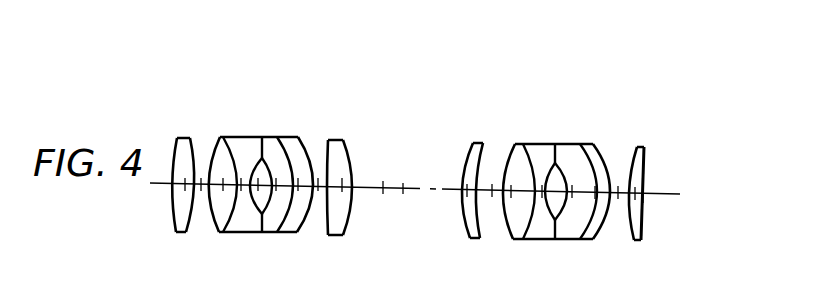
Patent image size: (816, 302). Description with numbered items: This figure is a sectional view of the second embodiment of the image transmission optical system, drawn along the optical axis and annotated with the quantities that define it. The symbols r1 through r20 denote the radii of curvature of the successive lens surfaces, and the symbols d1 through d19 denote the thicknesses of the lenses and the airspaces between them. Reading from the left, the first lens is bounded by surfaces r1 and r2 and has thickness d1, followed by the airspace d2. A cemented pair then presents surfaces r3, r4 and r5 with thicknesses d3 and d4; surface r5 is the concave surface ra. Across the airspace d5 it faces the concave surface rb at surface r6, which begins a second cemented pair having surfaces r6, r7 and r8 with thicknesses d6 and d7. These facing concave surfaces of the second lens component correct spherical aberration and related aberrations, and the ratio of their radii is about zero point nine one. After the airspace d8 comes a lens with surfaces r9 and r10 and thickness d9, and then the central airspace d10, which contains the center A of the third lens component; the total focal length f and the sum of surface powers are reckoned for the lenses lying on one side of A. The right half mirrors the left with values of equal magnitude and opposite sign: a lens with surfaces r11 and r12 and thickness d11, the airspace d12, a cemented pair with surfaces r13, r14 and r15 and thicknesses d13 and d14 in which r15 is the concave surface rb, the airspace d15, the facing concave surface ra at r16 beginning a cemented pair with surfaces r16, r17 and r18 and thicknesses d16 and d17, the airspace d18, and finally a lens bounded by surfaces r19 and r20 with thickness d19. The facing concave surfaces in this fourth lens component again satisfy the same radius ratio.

The center of the third lens component A is at (401, 179).
The radius of curvature of first lens surface r1 is at (172, 147).
The radius of curvature of second lens surface r2 is at (191, 141).
The radius of curvature of third lens surface r3 is at (215, 142).
The radius of curvature of fourth lens surface r4 is at (226, 139).
The radius of curvature of fifth lens surface r5 is at (252, 137).
The radius of curvature of sixth lens surface r6 is at (264, 137).
The radius of curvature of seventh lens surface r7 is at (278, 138).
The radius of curvature of eighth lens surface r8 is at (304, 142).
The radius of curvature of ninth lens surface r9 is at (329, 140).
The radius of curvature of tenth lens surface r10 is at (345, 140).
The radius of curvature of eleventh lens surface r11 is at (466, 154).
The radius of curvature of twelfth lens surface r12 is at (485, 148).
The radius of curvature of thirteenth lens surface r13 is at (505, 158).
The radius of curvature of fourteenth lens surface r14 is at (523, 144).
The radius of curvature of fifteenth lens surface r15 is at (543, 144).
The radius of curvature of sixteenth lens surface r16 is at (567, 144).
The radius of curvature of seventeenth lens surface r17 is at (587, 144).
The radius of curvature of eighteenth lens surface r18 is at (607, 165).
The radius of curvature of nineteenth lens surface r19 is at (632, 147).
The radius of curvature of twentieth lens surface r20 is at (645, 159).
The thickness of first lens d1 is at (185, 178).
The airspace between first lens and first cemented pair d2 is at (201, 178).
The thickness of second lens d3 is at (223, 178).
The thickness of third lens d4 is at (241, 178).
The airspace between facing concave surfaces d5 is at (258, 178).
The thickness of fourth lens d6 is at (276, 178).
The thickness of fifth lens d7 is at (298, 178).
The airspace between second cemented pair and sixth lens d8 is at (318, 178).
The thickness of sixth lens d9 is at (342, 178).
The central airspace d10 is at (383, 181).
The thickness of seventh lens d11 is at (467, 184).
The airspace between seventh lens and third cemented pair d12 is at (492, 184).
The thickness of eighth lens d13 is at (511, 185).
The thickness of ninth lens d14 is at (542, 185).
The airspace between facing concave surfaces d15 is at (572, 185).
The thickness of tenth lens d16 is at (595, 186).
The thickness of eleventh lens d17 is at (618, 186).
The airspace between fourth cemented pair and last lens d18 is at (635, 200).
The thickness of twelfth lens d19 is at (643, 203).